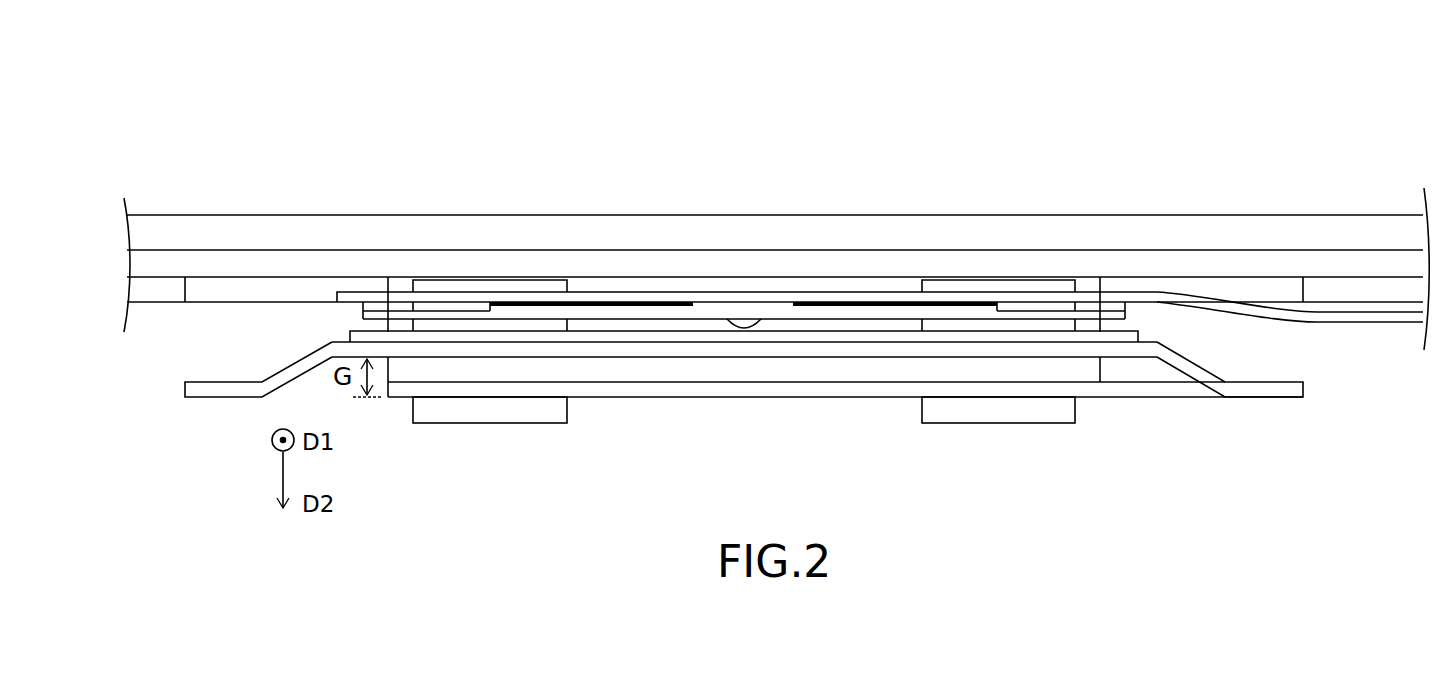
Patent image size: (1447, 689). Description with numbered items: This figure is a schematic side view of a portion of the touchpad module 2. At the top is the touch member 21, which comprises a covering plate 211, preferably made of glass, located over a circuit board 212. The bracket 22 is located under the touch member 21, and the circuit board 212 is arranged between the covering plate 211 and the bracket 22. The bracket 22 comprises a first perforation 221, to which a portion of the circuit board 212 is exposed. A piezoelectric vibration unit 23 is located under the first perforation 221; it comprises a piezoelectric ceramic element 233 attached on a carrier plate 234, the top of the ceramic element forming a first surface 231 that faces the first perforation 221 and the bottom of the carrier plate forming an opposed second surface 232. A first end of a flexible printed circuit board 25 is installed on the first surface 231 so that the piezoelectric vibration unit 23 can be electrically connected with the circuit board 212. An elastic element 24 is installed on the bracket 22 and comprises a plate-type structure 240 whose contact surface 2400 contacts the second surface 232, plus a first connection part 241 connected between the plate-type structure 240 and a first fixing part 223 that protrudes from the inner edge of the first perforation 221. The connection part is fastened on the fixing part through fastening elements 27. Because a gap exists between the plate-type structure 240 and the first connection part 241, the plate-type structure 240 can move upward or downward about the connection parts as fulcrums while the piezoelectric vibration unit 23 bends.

The touchpad module 2 is at (1269, 92).
The touch member 21 is at (1122, 176).
The covering plate 211 is at (1047, 232).
The circuit board 212 is at (921, 266).
The bracket 22 is at (1347, 288).
The first perforation 221 is at (1235, 293).
The first fixing part 223 is at (1057, 368).
The piezoelectric vibration unit 23 is at (216, 43).
The first surface 231 is at (605, 307).
The second surface 232 is at (717, 337).
The piezoelectric ceramic element 233 is at (537, 308).
The carrier plate 234 is at (822, 337).
The elastic element 24 is at (346, 68).
The plate-type structure 240 is at (768, 350).
The contact surface 2400 is at (688, 343).
The first connection part 241 is at (745, 388).
The flexible printed circuit board 25 is at (1247, 308).
The fastening elements 27 is at (492, 410).